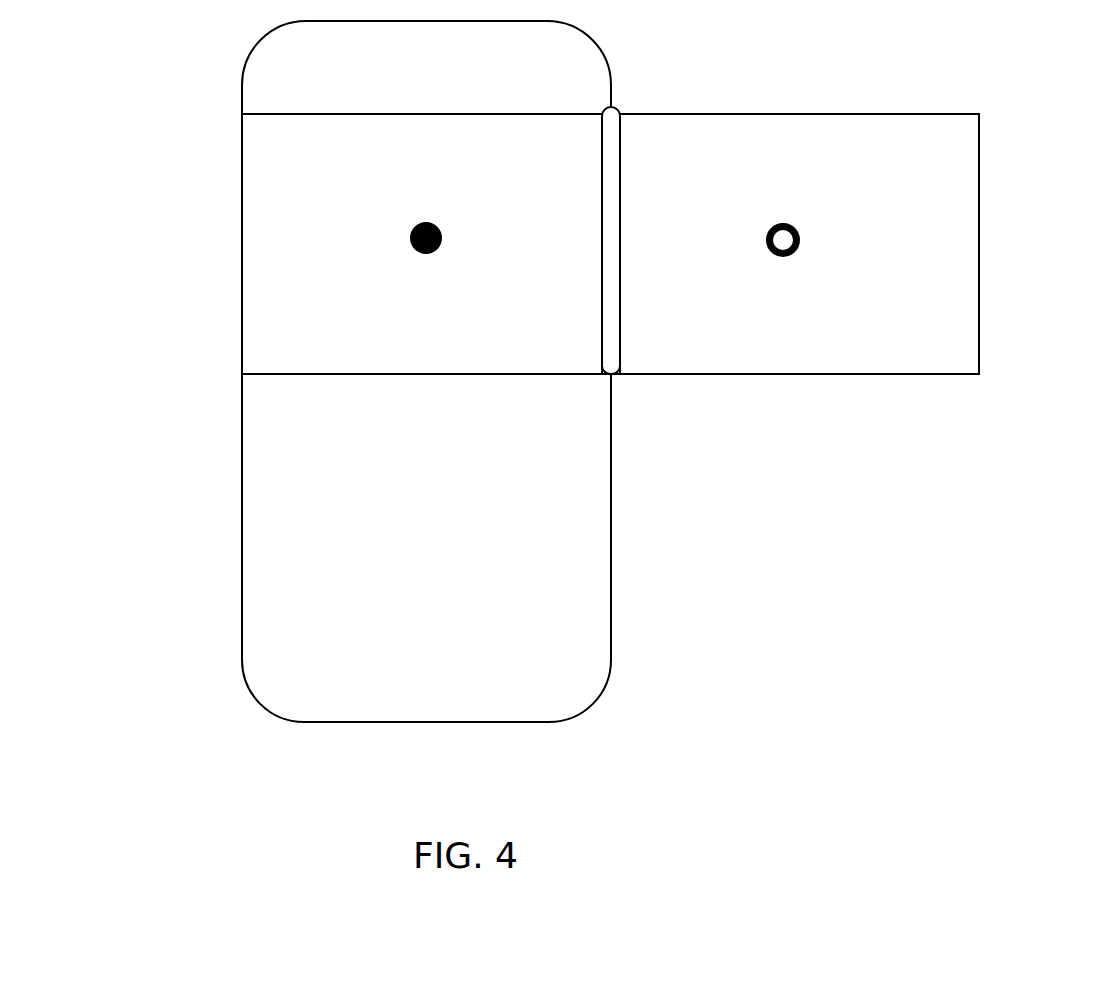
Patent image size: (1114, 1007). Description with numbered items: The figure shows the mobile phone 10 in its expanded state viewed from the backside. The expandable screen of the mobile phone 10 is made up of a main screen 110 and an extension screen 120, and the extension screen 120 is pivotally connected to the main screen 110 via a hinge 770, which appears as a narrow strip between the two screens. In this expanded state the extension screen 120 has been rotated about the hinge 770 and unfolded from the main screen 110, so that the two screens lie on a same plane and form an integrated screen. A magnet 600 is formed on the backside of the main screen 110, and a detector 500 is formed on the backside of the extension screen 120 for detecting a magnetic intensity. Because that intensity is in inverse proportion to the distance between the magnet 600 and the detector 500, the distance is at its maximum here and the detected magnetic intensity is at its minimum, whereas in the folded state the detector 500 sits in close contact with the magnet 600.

The mobile phone 10 is at (600, 371).
The main screen 110 is at (302, 295).
The extension screen 120 is at (958, 340).
The detector 500 is at (783, 222).
The magnet 600 is at (410, 240).
The hinge 770 is at (612, 140).